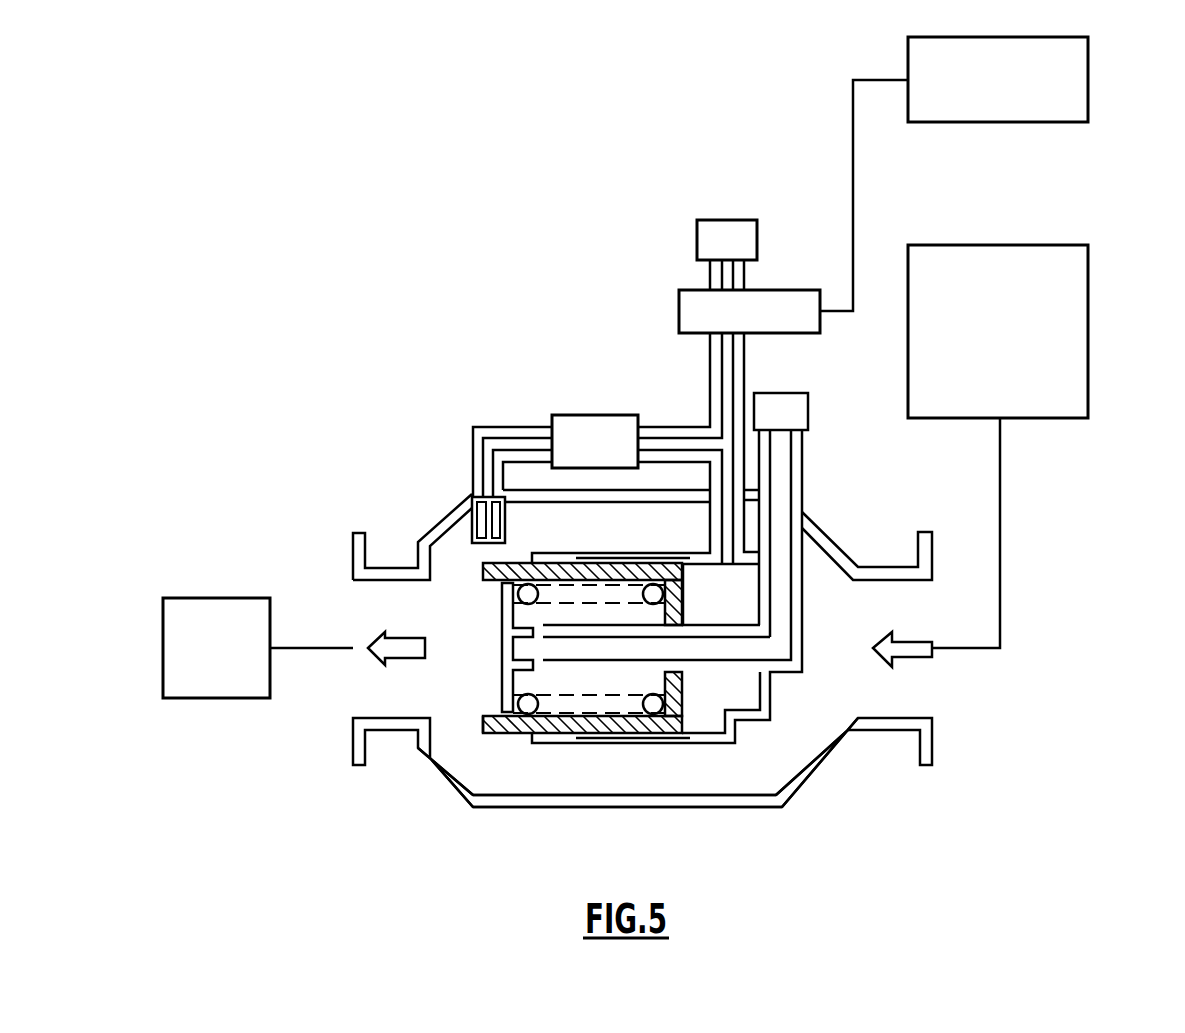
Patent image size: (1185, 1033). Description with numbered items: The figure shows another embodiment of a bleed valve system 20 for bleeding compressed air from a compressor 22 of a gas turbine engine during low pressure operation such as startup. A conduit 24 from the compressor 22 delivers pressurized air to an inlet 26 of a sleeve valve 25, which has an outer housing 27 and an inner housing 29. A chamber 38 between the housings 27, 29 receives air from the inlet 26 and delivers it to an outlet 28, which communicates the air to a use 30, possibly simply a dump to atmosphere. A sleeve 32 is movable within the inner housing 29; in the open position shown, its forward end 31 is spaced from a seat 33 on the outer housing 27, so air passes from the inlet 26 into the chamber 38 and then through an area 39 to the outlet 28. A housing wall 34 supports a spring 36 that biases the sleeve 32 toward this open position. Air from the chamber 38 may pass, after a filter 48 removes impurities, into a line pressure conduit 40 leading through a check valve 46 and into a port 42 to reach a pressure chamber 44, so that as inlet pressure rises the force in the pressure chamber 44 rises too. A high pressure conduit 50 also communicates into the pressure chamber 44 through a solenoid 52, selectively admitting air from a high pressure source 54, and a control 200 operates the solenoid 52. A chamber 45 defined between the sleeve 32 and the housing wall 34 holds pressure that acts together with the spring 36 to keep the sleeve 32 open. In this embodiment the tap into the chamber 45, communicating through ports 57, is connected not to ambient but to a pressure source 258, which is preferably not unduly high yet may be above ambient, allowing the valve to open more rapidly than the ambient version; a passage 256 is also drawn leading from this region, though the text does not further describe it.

The bleed valve system 20 is at (508, 219).
The compressor 22 is at (1003, 250).
The conduit 24 is at (1000, 556).
The sleeve valve 25 is at (836, 809).
The inlet 26 is at (877, 612).
The outer housing 27 is at (556, 810).
The outlet 28 is at (410, 625).
The inner housing 29 is at (735, 737).
The use 30 is at (208, 620).
The forward end 31 is at (480, 572).
The sleeve 32 is at (508, 733).
The seat 33 is at (432, 738).
The housing wall 34 is at (502, 615).
The spring 36 is at (612, 595).
The chamber 38 is at (662, 770).
The area 39 is at (460, 730).
The line pressure conduit 40 is at (505, 440).
The port 42 is at (722, 445).
The pressure chamber 44 is at (733, 611).
The chamber 45 is at (603, 682).
The check valve 46 is at (588, 415).
The filter 48 is at (473, 527).
The high pressure conduit 50 is at (720, 378).
The solenoid 52 is at (785, 292).
The high pressure source 54 is at (716, 220).
The ports 57 is at (541, 632).
The control 200 is at (1090, 83).
The passage 256 is at (780, 457).
The pressure source 258 is at (808, 410).